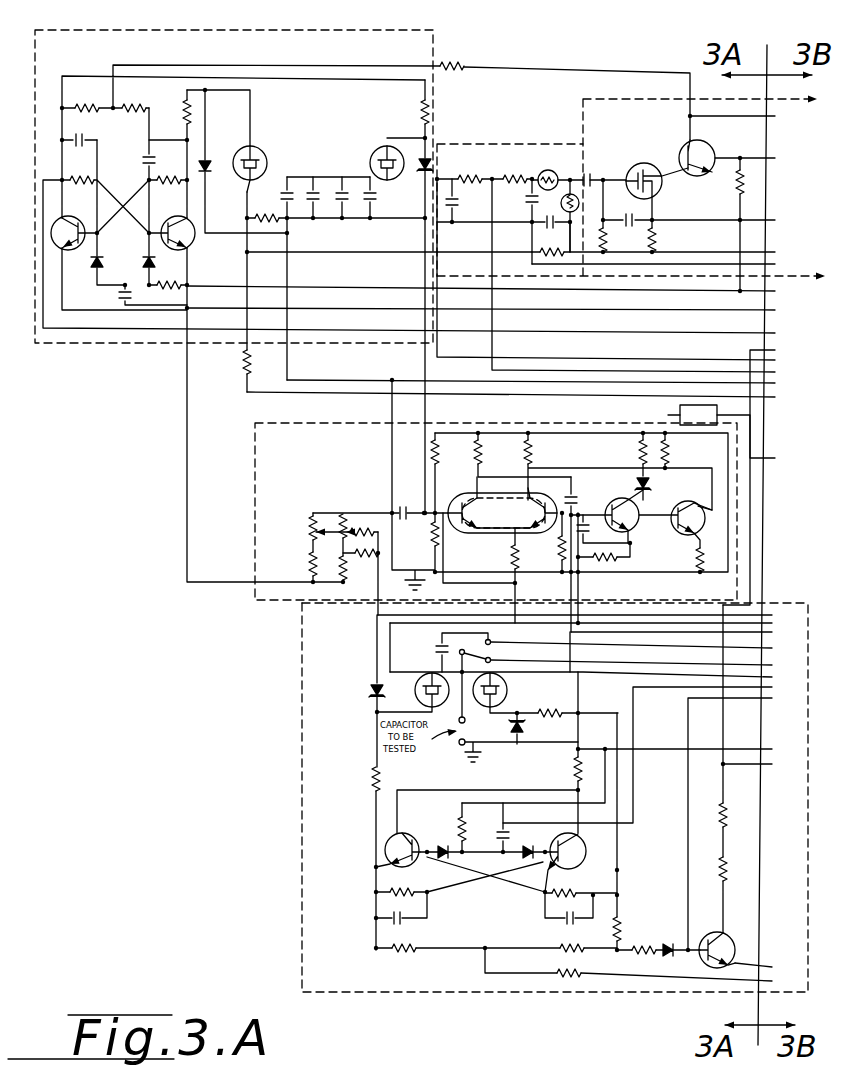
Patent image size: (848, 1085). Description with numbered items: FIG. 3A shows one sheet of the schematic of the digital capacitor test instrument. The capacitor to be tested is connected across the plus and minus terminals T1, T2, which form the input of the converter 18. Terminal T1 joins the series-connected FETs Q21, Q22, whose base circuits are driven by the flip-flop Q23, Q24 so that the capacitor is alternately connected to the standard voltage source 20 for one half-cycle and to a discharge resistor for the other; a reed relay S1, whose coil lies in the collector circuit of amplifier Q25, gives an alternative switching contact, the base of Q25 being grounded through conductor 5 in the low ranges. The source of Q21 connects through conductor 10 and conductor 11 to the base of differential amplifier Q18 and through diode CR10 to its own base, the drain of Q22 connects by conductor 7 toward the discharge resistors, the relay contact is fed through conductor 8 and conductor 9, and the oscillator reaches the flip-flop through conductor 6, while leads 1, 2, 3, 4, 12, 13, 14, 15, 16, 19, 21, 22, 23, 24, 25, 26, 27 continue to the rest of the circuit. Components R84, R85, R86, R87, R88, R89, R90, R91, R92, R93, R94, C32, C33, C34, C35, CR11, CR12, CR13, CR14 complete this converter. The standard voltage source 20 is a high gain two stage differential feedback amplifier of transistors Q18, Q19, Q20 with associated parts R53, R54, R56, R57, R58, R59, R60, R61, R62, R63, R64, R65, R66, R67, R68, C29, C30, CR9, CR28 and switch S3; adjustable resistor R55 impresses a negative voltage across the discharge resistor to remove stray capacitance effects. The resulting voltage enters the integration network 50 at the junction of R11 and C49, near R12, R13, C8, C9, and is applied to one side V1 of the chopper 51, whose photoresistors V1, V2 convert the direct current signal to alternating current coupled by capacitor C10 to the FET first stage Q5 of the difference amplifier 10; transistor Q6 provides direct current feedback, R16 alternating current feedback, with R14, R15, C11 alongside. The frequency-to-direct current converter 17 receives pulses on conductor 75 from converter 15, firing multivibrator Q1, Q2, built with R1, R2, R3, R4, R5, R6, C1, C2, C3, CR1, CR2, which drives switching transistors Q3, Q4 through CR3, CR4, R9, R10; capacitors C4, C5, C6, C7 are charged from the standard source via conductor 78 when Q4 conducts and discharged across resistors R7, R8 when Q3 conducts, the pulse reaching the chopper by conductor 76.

The terminal 1 is at (635, 969).
The terminal 2 is at (760, 967).
The terminal 3 is at (755, 765).
The terminal 4 is at (682, 750).
The terminal 5 is at (737, 820).
The terminal 6 is at (645, 751).
The terminal 7 is at (588, 677).
The terminal 8 is at (639, 666).
The terminal 9 is at (639, 649).
The amplifier section 10 is at (636, 93).
The terminal 11 is at (593, 624).
The terminal 12 is at (587, 614).
The terminal 13 is at (555, 599).
The terminal 14 is at (758, 441).
The terminal 15 is at (523, 397).
The terminal 16 is at (543, 385).
The oscillator section 17 is at (262, 30).
The timing and control circuit 18 is at (234, 792).
The terminal 19 is at (761, 473).
The flip-flop circuit 20 is at (102, 350).
The terminal 21 is at (493, 311).
The terminal 22 is at (493, 292).
The terminal 23 is at (665, 268).
The terminal 24 is at (665, 253).
The terminal 25 is at (700, 222).
The terminal 26 is at (757, 159).
The terminal 27 is at (744, 117).
The bridge network 50 is at (484, 142).
The lamp network 51 is at (552, 142).
The conductor 75 is at (352, 310).
The conductor 76 is at (390, 247).
The conductor 78 is at (420, 363).
The resistor R1 is at (87, 100).
The resistor R2 is at (79, 172).
The resistor R3 is at (131, 100).
The resistor R4 is at (168, 190).
The resistor R5 is at (168, 275).
The resistor R6 is at (175, 115).
The resistor R7 is at (267, 224).
The resistor R8 is at (256, 362).
The resistor R9 is at (565, 94).
The resistor R10 is at (423, 110).
The resistor R11 is at (464, 170).
The resistor R12 is at (512, 170).
The resistor R13 is at (555, 239).
The resistor R14 is at (617, 236).
The resistor R15 is at (666, 236).
The resistor R16 is at (739, 186).
The resistor R53 is at (294, 532).
The resistor R54 is at (295, 567).
The resistor R55 is at (341, 511).
The resistor R56 is at (347, 526).
The resistor R57 is at (361, 563).
The resistor R58 is at (346, 585).
The resistor R59 is at (449, 473).
The resistor R60 is at (415, 551).
The resistor R61 is at (522, 455).
The resistor R62 is at (618, 471).
The resistor R63 is at (499, 564).
The resistor R64 is at (548, 542).
The resistor R65 is at (604, 559).
The resistor R66 is at (626, 454).
The resistor R67 is at (682, 450).
The resistor R68 is at (695, 561).
The resistor R84 is at (401, 884).
The resistor R85 is at (430, 940).
The resistor R86 is at (466, 823).
The resistor R87 is at (567, 705).
The resistor R88 is at (559, 769).
The resistor R89 is at (475, 832).
The resistor R90 is at (551, 941).
The resistor R91 is at (568, 966).
The resistor R92 is at (619, 914).
The resistor R93 is at (640, 938).
The resistor R94 is at (710, 869).
The capacitor C1 is at (81, 134).
The capacitor C2 is at (139, 295).
The capacitor C3 is at (137, 144).
The capacitor C4 is at (274, 197).
The capacitor C5 is at (305, 197).
The capacitor C6 is at (334, 197).
The capacitor C7 is at (362, 197).
The capacitor C8 is at (519, 200).
The capacitor C9 is at (540, 228).
The capacitor C10 is at (590, 173).
The capacitor C11 is at (627, 215).
The capacitor C29 is at (578, 493).
The capacitor C30 is at (592, 532).
The capacitor C32 is at (437, 652).
The capacitor C33 is at (401, 908).
The capacitor C34 is at (507, 832).
The capacitor C35 is at (569, 908).
The capacitor C49 is at (465, 200).
The transistor Q1 is at (80, 220).
The transistor Q2 is at (163, 225).
The field effect transistor Q3 is at (257, 150).
The field effect transistor Q4 is at (373, 153).
The field effect transistor Q5 is at (642, 163).
The transistor Q6 is at (712, 148).
The dual transistor Q18 is at (502, 511).
The transistor Q19 is at (616, 517).
The transistor Q20 is at (681, 524).
The field effect transistor Q21 is at (413, 692).
The field effect transistor Q22 is at (508, 686).
The transistor Q23 is at (410, 827).
The transistor Q24 is at (583, 855).
The transistor Q25 is at (722, 937).
The diode CR1 is at (97, 264).
The diode CR2 is at (144, 261).
The diode CR3 is at (210, 158).
The zener diode CR4 is at (420, 176).
The zener diode CR9 is at (650, 484).
The zener diode CR10 is at (371, 690).
The zener diode CR11 is at (514, 740).
The diode CR12 is at (444, 845).
The diode CR13 is at (522, 859).
The diode CR14 is at (666, 943).
The varactor diode CR28 is at (402, 506).
The lamp V1 is at (557, 174).
The photoresistor V2 is at (560, 216).
The relay switch S1 is at (720, 813).
The range switch S3 is at (669, 415).
The test terminal T1 is at (458, 699).
The test terminal T2 is at (510, 746).